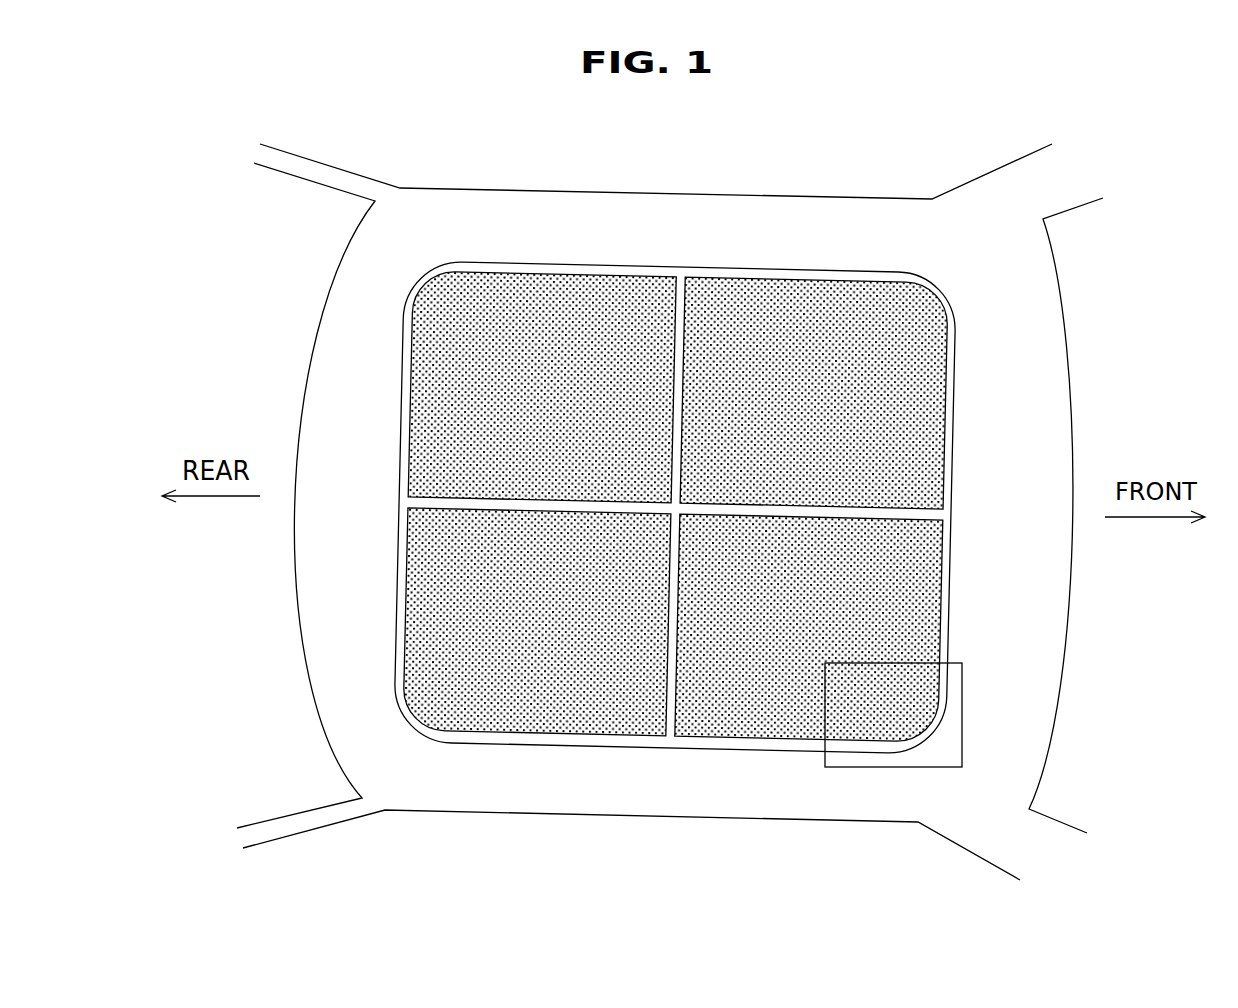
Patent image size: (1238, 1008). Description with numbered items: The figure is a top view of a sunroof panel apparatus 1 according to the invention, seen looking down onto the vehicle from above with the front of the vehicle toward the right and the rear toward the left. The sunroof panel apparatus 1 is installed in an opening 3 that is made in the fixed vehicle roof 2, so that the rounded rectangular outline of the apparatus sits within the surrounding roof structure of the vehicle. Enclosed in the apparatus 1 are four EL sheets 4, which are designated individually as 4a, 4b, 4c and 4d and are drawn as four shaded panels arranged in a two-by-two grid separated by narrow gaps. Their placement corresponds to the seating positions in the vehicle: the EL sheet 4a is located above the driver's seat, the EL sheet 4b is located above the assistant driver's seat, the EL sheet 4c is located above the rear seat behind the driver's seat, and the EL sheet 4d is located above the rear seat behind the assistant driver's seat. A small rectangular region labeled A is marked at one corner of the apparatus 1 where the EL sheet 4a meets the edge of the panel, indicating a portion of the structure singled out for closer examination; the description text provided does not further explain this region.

The sunroof panel apparatus 1 is at (582, 298).
The fixed vehicle roof 2 is at (873, 243).
The opening 3 is at (748, 308).
The EL sheets 4 is at (795, 492).
The EL sheet 4a is at (912, 588).
The EL sheet 4b is at (910, 358).
The EL sheet 4c is at (488, 720).
The EL sheet 4d is at (488, 320).
The detail region A is at (962, 712).